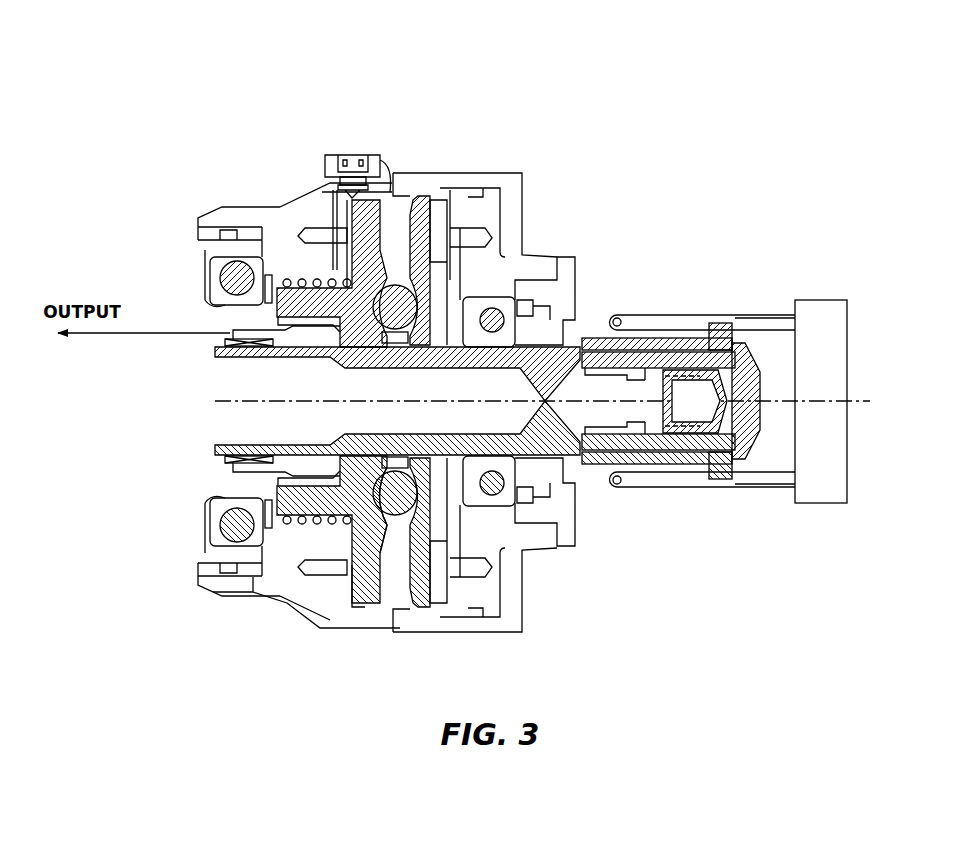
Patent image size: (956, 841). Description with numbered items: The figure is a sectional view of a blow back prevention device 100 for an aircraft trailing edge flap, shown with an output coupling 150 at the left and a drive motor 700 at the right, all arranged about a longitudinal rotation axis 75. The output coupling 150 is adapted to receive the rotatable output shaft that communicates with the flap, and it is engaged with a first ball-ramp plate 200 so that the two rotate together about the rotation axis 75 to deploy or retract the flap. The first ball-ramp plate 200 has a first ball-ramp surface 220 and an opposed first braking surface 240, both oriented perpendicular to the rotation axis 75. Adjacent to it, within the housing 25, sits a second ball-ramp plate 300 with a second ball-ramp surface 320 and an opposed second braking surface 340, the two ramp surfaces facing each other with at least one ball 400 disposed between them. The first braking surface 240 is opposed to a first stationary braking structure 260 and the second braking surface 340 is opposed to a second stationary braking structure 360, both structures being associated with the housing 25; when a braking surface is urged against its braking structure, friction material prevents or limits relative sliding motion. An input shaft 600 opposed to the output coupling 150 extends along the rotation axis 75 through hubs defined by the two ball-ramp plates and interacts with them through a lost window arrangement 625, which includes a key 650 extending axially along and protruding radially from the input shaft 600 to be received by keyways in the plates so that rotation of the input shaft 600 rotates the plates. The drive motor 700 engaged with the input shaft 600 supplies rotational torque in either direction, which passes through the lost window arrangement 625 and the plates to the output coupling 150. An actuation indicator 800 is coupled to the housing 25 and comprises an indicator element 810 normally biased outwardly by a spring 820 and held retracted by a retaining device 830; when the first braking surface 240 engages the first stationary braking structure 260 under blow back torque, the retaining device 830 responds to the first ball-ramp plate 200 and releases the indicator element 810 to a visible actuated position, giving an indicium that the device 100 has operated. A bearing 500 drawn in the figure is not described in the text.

The housing 25 is at (277, 555).
The longitudinal rotation axis 75 is at (367, 403).
The blow back prevention device 100 is at (152, 258).
The output coupling 150 is at (263, 328).
The first ball-ramp plate 200 is at (283, 250).
The first ball-ramp surface 220 is at (390, 557).
The first braking surface 240 is at (337, 213).
The first stationary braking structure 260 is at (362, 580).
The second ball-ramp plate 300 is at (422, 277).
The second ball-ramp surface 320 is at (410, 250).
The second braking surface 340 is at (440, 576).
The second stationary braking structure 360 is at (425, 232).
The ball 400 is at (387, 330).
The bearing 500 is at (297, 275).
The input shaft 600 is at (582, 346).
The lost window arrangement 625 is at (440, 334).
The key 650 is at (327, 467).
The drive motor 700 is at (824, 486).
The actuation indicator 800 is at (362, 152).
The indicator element 810 is at (345, 176).
The spring 820 is at (332, 182).
The retaining device 830 is at (338, 182).